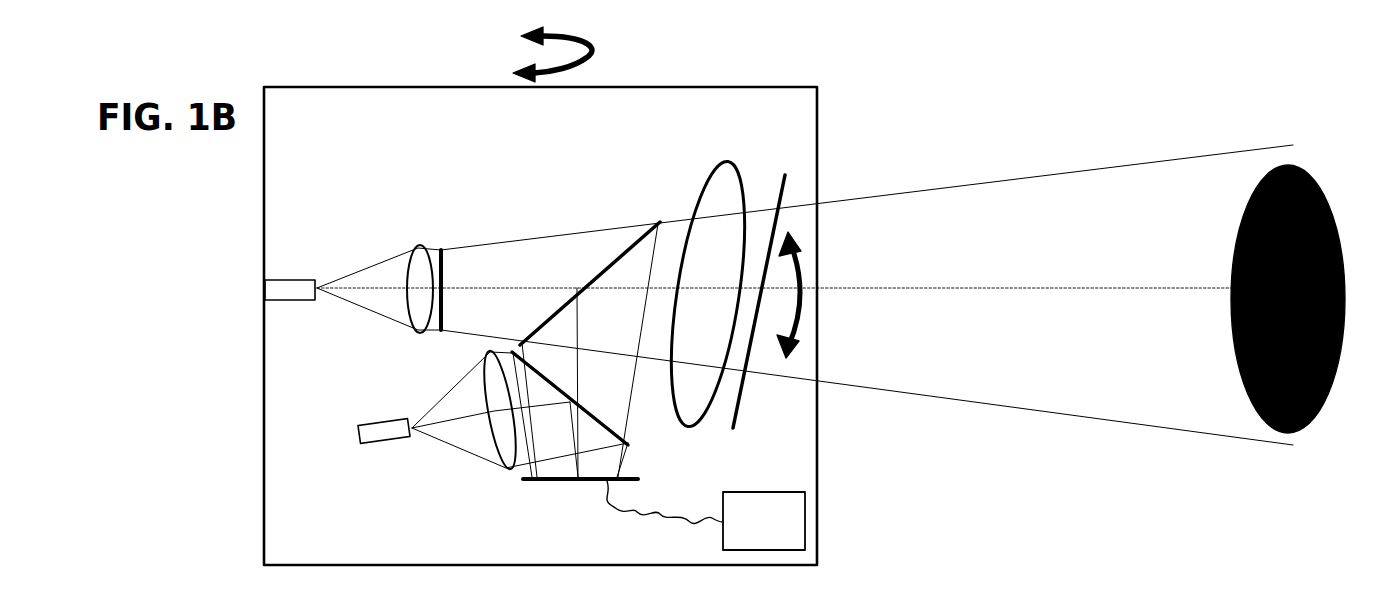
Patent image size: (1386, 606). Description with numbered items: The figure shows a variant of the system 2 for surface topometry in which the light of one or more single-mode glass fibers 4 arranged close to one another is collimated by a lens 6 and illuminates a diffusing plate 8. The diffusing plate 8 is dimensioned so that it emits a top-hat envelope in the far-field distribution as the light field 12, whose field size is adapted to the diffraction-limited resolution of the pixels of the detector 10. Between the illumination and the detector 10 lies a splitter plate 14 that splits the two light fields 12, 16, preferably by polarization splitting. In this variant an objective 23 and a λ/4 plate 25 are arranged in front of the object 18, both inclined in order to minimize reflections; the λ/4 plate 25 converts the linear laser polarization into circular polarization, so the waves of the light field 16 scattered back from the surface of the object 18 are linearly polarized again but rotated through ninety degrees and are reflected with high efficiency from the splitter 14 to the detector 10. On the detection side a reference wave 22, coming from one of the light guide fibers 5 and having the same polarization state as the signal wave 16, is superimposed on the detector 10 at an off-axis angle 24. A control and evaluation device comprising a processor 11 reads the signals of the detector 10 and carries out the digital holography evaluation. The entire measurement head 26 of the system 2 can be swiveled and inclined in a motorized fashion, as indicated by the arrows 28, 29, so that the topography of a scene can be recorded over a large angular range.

The system 2 is at (923, 109).
The single-mode glass fibers 4 is at (289, 280).
The light guide fibers 5 is at (380, 437).
The lens 6 is at (413, 246).
The diffusing plate 8 is at (447, 259).
The detector 10 is at (558, 482).
The processor 11 is at (724, 490).
The light field 12 is at (527, 238).
The splitter plate 14 is at (625, 250).
The light field 16 is at (632, 398).
The object 18 is at (1317, 183).
The reference wave 22 is at (522, 473).
The objective 23 is at (720, 163).
The angle 24 is at (622, 450).
The λ/4 plate 25 is at (783, 173).
The measurement head 26 is at (755, 87).
The arrow 28 is at (588, 43).
The arrow 29 is at (805, 265).